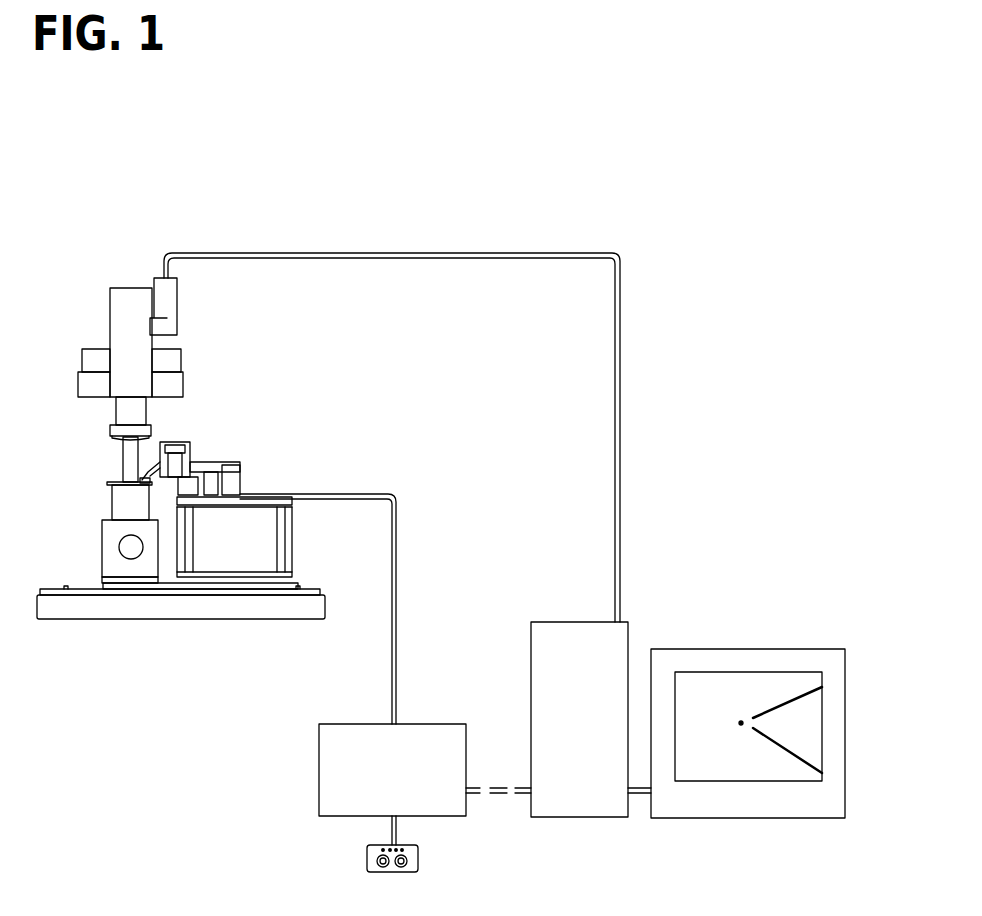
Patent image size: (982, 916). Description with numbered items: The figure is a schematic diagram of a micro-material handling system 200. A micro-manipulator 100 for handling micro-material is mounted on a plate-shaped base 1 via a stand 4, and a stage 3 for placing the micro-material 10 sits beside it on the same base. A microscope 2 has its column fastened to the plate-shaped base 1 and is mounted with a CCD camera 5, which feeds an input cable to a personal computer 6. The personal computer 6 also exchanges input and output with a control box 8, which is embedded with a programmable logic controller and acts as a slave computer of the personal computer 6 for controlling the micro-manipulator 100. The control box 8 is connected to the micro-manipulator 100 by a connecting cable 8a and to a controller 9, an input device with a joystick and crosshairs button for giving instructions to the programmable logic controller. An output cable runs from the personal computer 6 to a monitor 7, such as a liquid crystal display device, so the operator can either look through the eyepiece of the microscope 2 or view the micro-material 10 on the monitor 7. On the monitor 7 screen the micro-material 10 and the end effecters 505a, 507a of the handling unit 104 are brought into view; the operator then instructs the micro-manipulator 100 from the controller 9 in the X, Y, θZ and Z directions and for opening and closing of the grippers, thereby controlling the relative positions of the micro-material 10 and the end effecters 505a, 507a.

The plate-shaped base 1 is at (90, 612).
The microscope 2 is at (110, 312).
The stage 3 is at (102, 520).
The stand 4 is at (283, 538).
The CCD camera 5 is at (177, 300).
The personal computer 6 is at (578, 818).
The monitor 7 is at (770, 818).
The control box 8 is at (319, 758).
The connecting cable 8a is at (396, 548).
The controller 9 is at (418, 853).
The micro-material 10 is at (742, 716).
The micro-manipulator 100 is at (230, 440).
The handling unit 104 is at (133, 478).
The micro-material handling system 200 is at (430, 220).
The end effecter 505a is at (782, 700).
The end effecter 507a is at (787, 752).